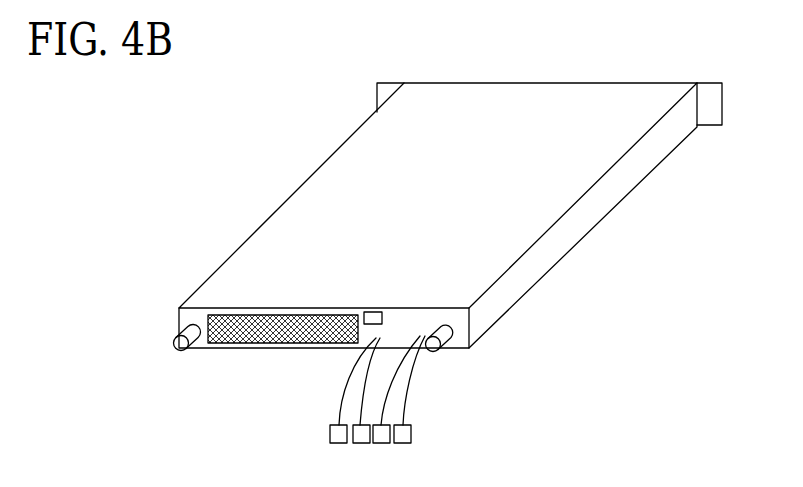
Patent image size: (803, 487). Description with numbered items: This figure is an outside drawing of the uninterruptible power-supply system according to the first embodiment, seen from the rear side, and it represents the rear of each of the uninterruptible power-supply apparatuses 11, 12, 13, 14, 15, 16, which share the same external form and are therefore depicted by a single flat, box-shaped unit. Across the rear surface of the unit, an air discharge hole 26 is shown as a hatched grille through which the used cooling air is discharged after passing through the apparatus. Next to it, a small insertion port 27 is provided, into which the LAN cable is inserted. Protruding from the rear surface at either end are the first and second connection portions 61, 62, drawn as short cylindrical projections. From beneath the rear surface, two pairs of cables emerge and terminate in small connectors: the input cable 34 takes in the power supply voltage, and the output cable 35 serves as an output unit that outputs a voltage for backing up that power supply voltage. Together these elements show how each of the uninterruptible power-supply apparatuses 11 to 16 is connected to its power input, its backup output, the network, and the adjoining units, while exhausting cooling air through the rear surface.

The uninterruptible power-supply apparatus 11 is at (450, 203).
The uninterruptible power-supply apparatus 12 is at (450, 203).
The uninterruptible power-supply apparatus 13 is at (450, 203).
The uninterruptible power-supply apparatus 14 is at (450, 203).
The uninterruptible power-supply apparatus 15 is at (450, 203).
The uninterruptible power-supply apparatus 16 is at (338, 148).
The air discharge hole 26 is at (247, 342).
The insertion port 27 is at (366, 311).
The input cable 34 is at (388, 387).
The output cable 35 is at (360, 408).
The first connection portion 61 is at (452, 332).
The second connection portion 62 is at (180, 327).